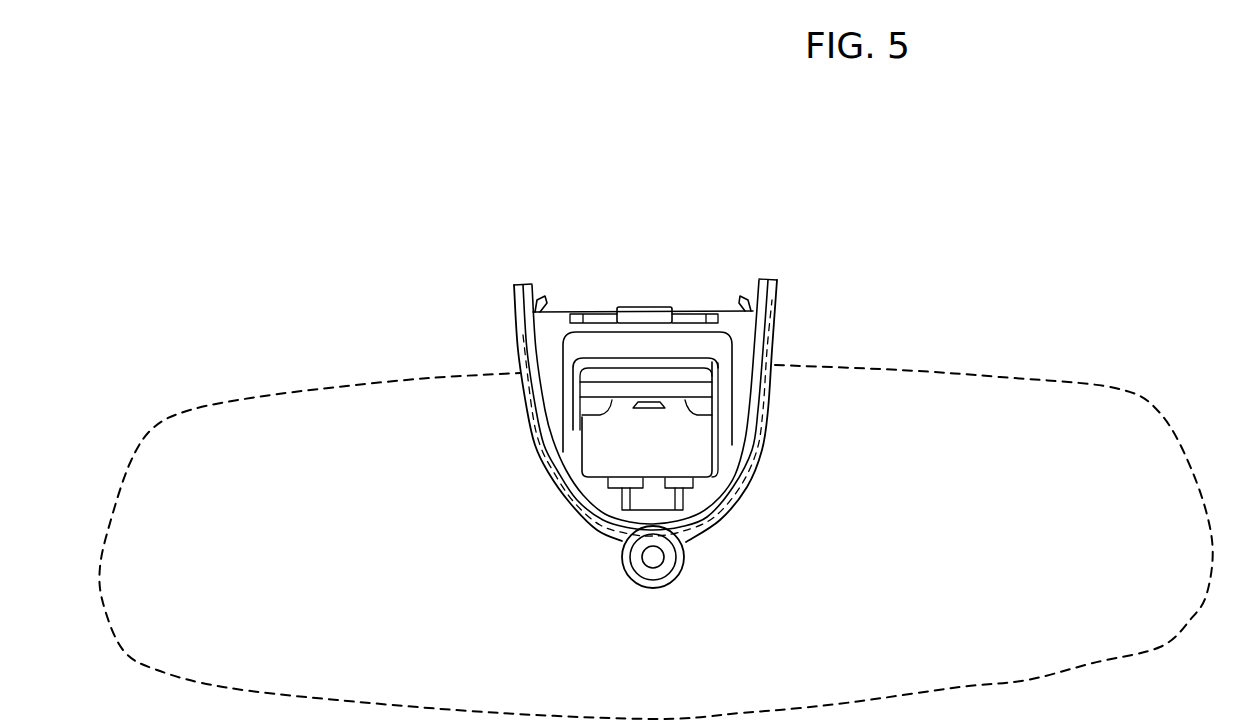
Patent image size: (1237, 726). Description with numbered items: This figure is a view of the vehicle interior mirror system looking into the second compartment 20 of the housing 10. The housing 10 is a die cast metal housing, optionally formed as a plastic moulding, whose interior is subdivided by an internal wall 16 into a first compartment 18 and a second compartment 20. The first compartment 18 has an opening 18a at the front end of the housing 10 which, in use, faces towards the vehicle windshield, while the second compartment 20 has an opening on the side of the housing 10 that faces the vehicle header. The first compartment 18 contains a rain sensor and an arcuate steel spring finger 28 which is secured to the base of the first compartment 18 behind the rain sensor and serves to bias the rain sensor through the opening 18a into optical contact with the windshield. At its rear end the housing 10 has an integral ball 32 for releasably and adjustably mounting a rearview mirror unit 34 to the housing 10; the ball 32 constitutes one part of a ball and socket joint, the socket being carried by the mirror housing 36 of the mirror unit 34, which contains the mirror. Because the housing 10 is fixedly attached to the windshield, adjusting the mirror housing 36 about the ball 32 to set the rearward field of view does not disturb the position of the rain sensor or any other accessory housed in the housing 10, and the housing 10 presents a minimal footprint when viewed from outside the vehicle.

The housing 10 is at (748, 478).
The internal wall 16 is at (700, 345).
The first compartment 18 is at (700, 302).
The opening 18a is at (581, 278).
The second compartment 20 is at (698, 443).
The arcuate steel spring finger 28 is at (645, 306).
The ball 32 is at (658, 554).
The rearview mirror unit 34 is at (1163, 389).
The mirror housing 36 is at (670, 588).